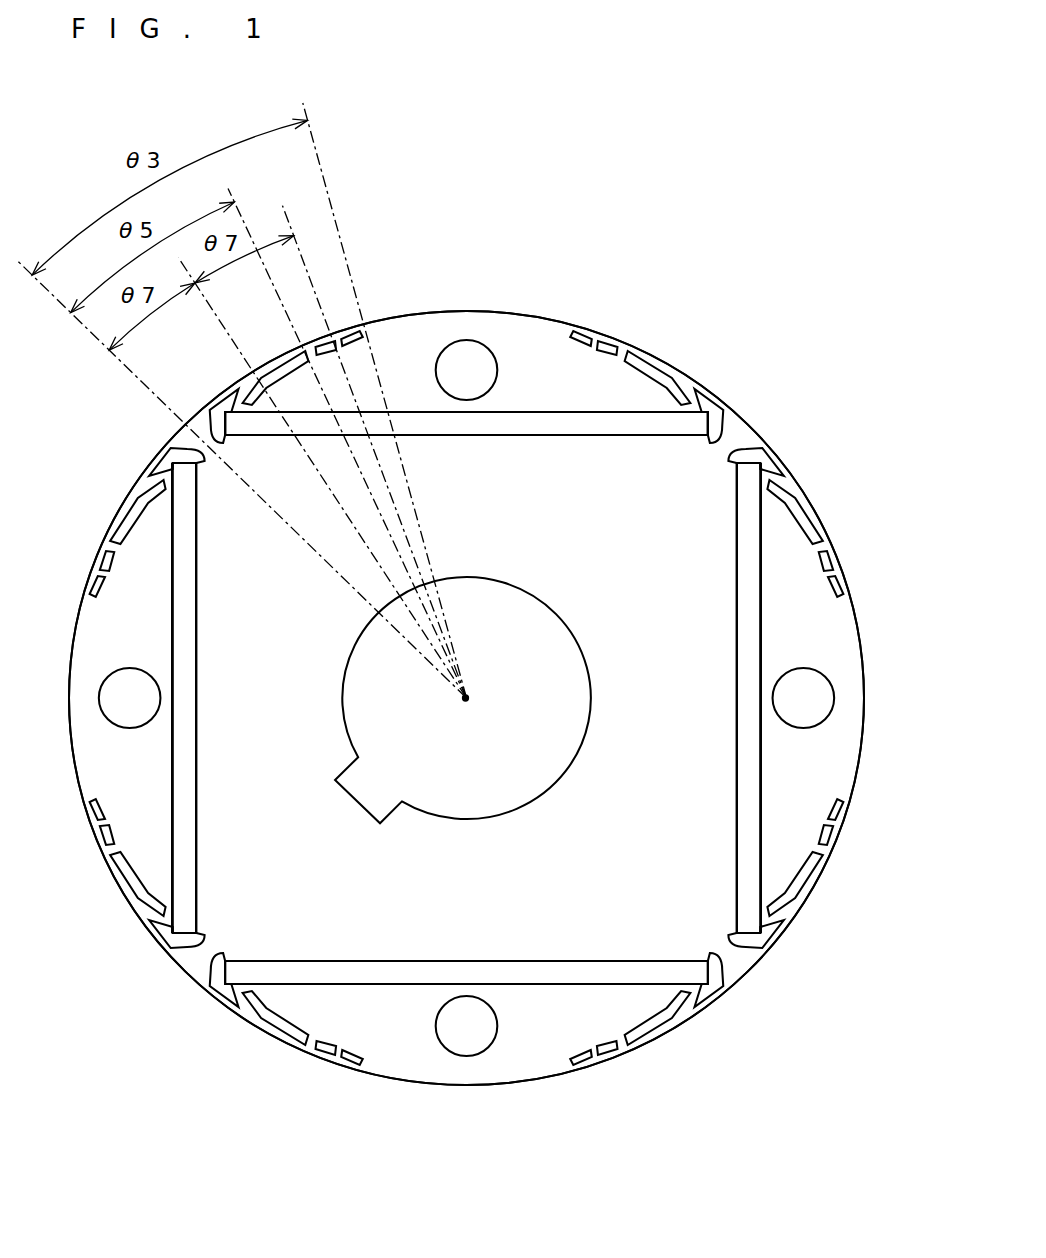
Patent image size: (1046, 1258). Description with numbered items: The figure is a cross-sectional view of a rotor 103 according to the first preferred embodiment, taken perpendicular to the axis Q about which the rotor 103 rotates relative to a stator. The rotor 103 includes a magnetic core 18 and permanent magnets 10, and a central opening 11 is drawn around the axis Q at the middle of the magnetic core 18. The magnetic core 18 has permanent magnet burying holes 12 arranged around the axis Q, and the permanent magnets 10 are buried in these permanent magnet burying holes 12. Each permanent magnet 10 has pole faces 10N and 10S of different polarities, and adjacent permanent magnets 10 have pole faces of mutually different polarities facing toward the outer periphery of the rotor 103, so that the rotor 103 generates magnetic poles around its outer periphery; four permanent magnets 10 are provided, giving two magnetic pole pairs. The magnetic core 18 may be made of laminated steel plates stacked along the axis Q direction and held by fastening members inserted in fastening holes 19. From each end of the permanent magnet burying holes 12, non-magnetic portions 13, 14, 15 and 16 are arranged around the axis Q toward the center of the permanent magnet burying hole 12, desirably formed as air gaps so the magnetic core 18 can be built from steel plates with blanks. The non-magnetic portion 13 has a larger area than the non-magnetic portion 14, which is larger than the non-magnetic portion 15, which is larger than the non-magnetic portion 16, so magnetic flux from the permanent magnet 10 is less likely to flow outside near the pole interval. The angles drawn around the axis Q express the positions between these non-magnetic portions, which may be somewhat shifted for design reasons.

The permanent magnet 10 is at (487, 422).
The pole face 10N is at (528, 413).
The pole face 10S is at (450, 436).
The shaft hole 11 is at (596, 689).
The permanent magnet burying hole 12 is at (600, 436).
The non-magnetic portion 13 is at (211, 418).
The non-magnetic portion 14 is at (277, 367).
The non-magnetic portion 15 is at (325, 344).
The non-magnetic portion 16 is at (350, 336).
The magnetic core 18 is at (628, 790).
The fastening hole 19 is at (464, 340).
The rotor 103 is at (541, 312).
The axis Q is at (466, 701).